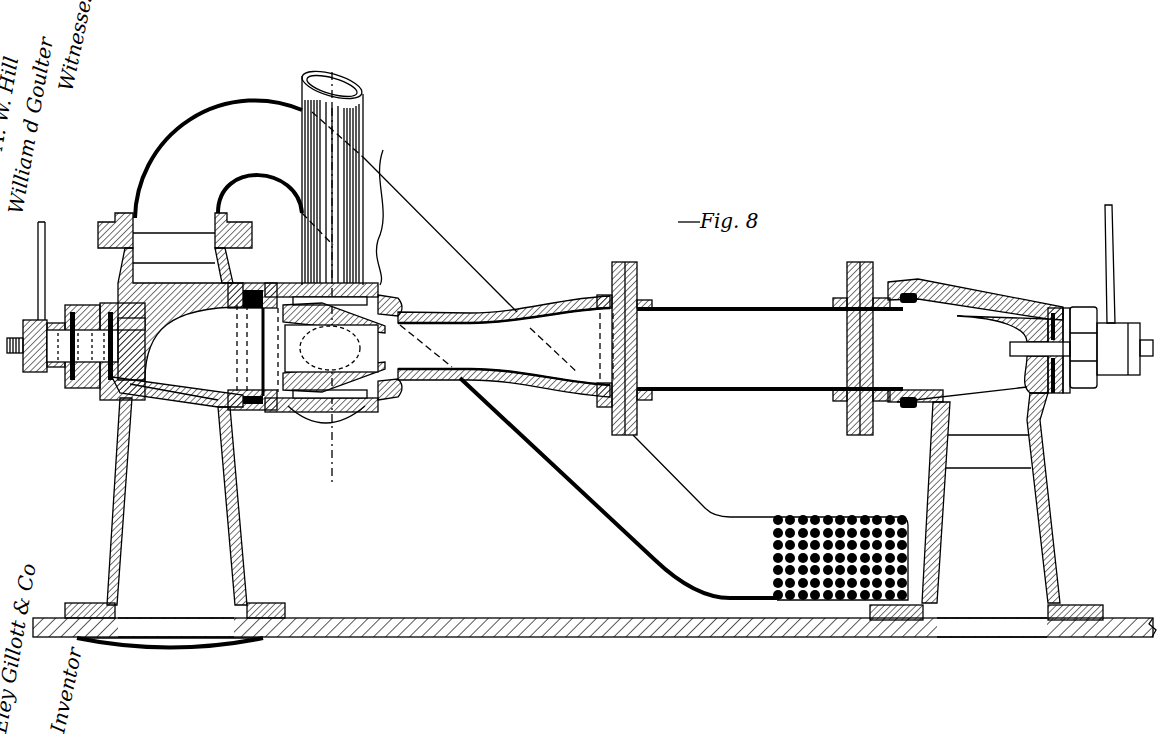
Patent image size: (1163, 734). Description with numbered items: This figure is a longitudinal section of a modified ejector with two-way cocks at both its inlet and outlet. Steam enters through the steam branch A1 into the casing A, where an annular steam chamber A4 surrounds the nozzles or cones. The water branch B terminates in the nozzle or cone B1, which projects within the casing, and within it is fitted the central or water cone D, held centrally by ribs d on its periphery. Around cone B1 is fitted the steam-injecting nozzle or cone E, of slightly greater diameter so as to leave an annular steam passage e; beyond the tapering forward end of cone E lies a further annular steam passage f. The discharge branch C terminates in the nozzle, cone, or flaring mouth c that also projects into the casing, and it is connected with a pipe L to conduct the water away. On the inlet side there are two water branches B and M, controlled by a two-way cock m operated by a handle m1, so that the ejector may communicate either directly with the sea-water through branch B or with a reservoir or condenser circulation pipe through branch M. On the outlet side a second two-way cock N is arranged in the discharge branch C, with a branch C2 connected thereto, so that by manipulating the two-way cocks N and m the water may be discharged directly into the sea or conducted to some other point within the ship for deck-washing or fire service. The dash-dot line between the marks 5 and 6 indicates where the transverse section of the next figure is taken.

The section line 5 6 5 is at (332, 72).
The section line 5 6 is at (332, 288).
The handle m1 is at (57, 271).
The water branch M is at (503, 350).
The two-way cock m is at (92, 351).
The water branch B is at (175, 433).
The nozzle or cone B1 is at (282, 428).
The nozzle or cone E is at (378, 289).
The annular steam passage e is at (330, 346).
The casing A is at (343, 395).
The steam branch A1 is at (334, 249).
The annular steam chamber A4 is at (355, 422).
The ribs d is at (330, 348).
The cone D is at (331, 348).
The nozzle or cone c is at (398, 302).
The annular steam passage f is at (389, 404).
The discharge branch C is at (525, 348).
The pipe L is at (770, 348).
The two-way cock N is at (1020, 306).
The branch C2 is at (986, 506).